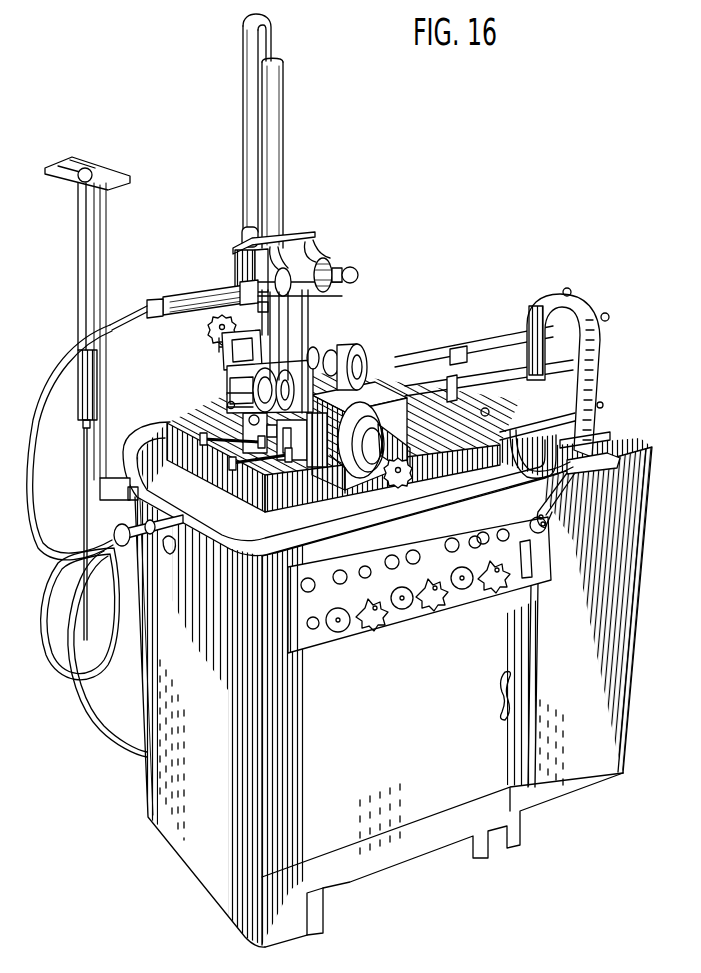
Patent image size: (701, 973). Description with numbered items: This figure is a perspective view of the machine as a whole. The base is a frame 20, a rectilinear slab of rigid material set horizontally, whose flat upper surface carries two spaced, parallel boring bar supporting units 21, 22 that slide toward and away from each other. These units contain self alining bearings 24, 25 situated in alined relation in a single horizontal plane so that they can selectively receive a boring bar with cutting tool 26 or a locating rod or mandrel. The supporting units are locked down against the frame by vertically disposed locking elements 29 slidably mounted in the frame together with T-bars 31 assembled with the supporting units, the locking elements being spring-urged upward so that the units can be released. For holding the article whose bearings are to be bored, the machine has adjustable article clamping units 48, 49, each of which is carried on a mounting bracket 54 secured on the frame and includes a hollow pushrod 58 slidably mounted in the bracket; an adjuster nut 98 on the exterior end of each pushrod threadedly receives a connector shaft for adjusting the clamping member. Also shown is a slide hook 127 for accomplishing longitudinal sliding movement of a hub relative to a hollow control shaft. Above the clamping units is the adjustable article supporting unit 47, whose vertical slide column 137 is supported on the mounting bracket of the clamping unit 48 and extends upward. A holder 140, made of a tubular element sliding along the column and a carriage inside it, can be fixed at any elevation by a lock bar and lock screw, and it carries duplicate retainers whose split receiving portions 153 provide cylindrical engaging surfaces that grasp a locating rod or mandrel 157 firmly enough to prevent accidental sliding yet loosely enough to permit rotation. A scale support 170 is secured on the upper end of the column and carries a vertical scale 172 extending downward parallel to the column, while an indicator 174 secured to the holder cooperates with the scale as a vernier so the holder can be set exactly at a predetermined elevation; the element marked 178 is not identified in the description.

The frame 20 is at (190, 415).
The mounting bracket 54 is at (232, 419).
The T-bar 31 is at (208, 442).
The adjustable article clamping unit 48 is at (360, 415).
The hollow pushrod 58 is at (384, 478).
The adjuster nut 98 is at (413, 471).
The adjustable article clamping unit 49 is at (221, 355).
The boring bar supporting unit 22 is at (240, 368).
The self alining bearing 25 is at (255, 385).
The boring bar supporting unit 21 is at (312, 360).
The self alining bearing 24 is at (351, 356).
The boring bar with cutting tool 26 is at (483, 347).
The locking element 29 is at (447, 387).
The vertical scale 172 is at (247, 62).
The scale support 170 is at (268, 35).
The vertical slide column 137 is at (286, 177).
The indicator 174 is at (246, 236).
The holder 140 is at (236, 268).
The adjustable article supporting unit 47 is at (325, 238).
The locating rod or mandrel receiving portion 153 is at (312, 262).
The locating rod or mandrel 157 is at (350, 267).
The vertical rod 178 is at (310, 320).
The slide hook 127 is at (163, 563).